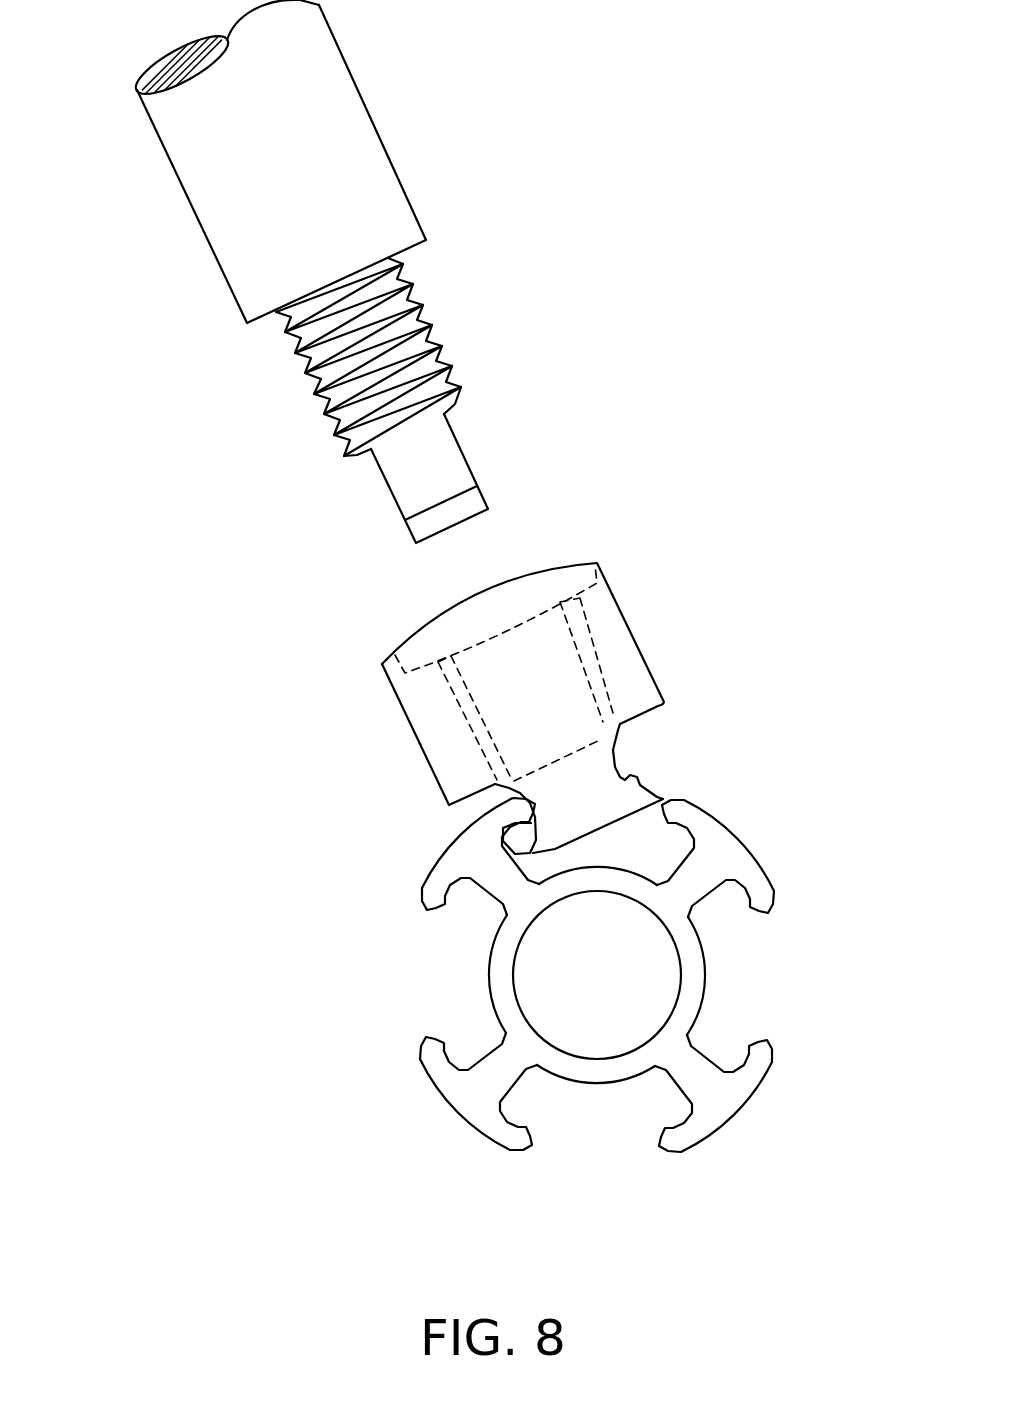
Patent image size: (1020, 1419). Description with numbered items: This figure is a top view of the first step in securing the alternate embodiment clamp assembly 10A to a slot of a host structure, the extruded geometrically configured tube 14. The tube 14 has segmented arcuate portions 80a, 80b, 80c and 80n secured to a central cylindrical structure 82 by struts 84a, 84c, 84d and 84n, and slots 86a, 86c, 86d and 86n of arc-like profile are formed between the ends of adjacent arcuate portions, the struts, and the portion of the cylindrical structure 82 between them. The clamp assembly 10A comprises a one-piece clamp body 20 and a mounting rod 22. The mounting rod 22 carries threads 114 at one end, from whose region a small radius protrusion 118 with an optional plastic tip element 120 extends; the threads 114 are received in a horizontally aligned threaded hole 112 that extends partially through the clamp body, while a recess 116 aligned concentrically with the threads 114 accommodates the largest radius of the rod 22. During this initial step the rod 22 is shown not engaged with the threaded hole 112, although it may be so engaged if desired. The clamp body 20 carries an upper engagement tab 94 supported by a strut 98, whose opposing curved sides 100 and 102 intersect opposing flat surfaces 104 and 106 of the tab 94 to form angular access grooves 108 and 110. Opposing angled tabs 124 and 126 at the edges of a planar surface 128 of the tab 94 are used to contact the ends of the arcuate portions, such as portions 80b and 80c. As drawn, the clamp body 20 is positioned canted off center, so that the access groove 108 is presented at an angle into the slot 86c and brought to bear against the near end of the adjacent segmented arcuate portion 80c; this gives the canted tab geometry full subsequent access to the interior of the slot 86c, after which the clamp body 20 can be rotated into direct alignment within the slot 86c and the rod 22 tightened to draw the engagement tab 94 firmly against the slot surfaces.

The clamp assembly 10A is at (248, 520).
The mounting rod 22 is at (392, 152).
The threads 114 is at (432, 328).
The small radius protrusion 118 is at (526, 449).
The plastic tip element 120 is at (465, 508).
The one-piece clamp body 20 is at (553, 740).
The curved side 100 is at (511, 788).
The recess 116 is at (560, 602).
The threaded hole 112 is at (580, 598).
The strut 98 is at (703, 794).
The curved side 102 is at (622, 732).
The angular access groove 110 is at (668, 775).
The upper engagement tab 94 is at (662, 782).
The angled tab 126 is at (668, 797).
The angled tab 124 is at (402, 851).
The flat surface 104 is at (527, 826).
The flat surface 106 is at (630, 775).
The angular access groove 108 is at (530, 820).
The planar surface 128 is at (616, 778).
The extruded geometrically configured tube 14 is at (571, 959).
The central cylindrical structure 82 is at (698, 985).
The strut 84a is at (773, 1121).
The strut 84c is at (385, 834).
The strut 84d is at (784, 827).
The strut 84n is at (385, 1103).
The segmented arcuate portion 80a is at (703, 1127).
The segmented arcuate portion 80b is at (756, 831).
The segmented arcuate portion 80c is at (433, 882).
The segmented arcuate portion 80n is at (432, 1052).
The slot 86a is at (638, 1105).
The slot 86c is at (722, 845).
The slot 86d is at (738, 930).
The slot 86n is at (443, 970).